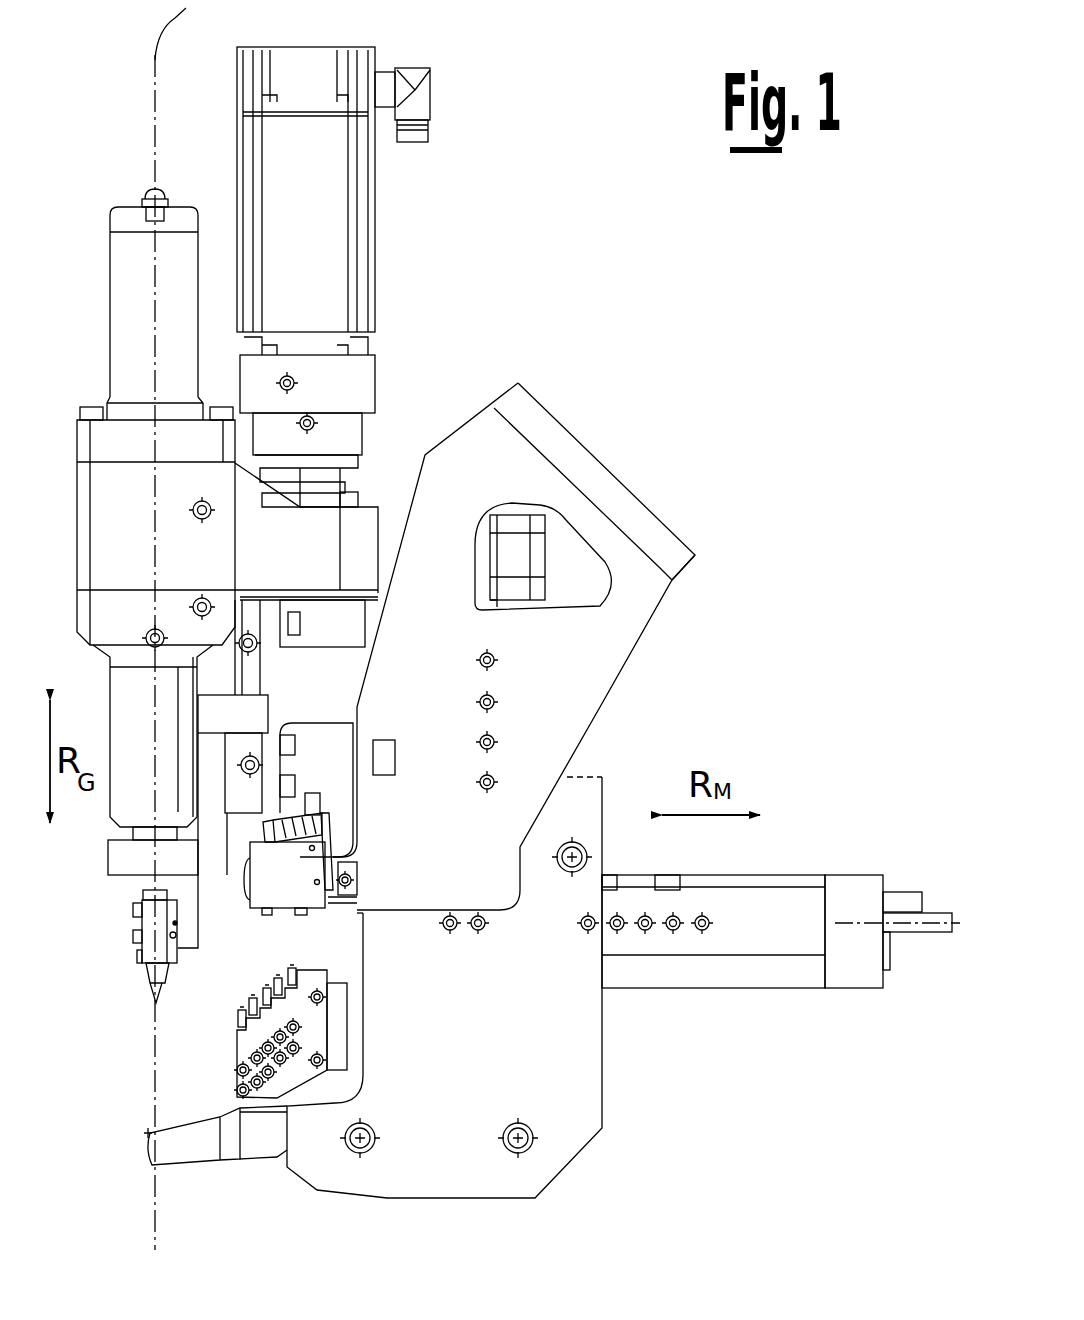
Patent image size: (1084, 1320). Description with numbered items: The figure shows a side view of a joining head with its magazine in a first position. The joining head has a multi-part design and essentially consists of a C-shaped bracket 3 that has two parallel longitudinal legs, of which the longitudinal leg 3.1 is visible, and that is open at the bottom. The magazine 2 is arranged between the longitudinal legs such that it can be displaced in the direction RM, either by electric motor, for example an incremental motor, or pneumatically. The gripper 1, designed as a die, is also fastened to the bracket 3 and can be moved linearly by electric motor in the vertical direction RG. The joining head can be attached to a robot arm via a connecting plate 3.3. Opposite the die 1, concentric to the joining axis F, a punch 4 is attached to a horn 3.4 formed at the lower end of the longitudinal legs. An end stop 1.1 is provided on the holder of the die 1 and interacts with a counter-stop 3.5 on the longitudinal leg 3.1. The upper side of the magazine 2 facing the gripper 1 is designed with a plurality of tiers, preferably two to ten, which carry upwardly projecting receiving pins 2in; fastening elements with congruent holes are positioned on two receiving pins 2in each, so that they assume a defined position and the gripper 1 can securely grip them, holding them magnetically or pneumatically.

The gripper 1 is at (118, 1010).
The end stop 1.1 is at (223, 821).
The magazine 2 is at (230, 1065).
The receiving pin 2in is at (248, 1013).
The C-shaped bracket 3 is at (592, 398).
The longitudinal leg 3.1 is at (567, 1140).
The connecting plate 3.3 is at (657, 528).
The horn 3.4 is at (203, 1147).
The counter-stop 3.5 is at (242, 853).
The punch 4 is at (148, 1133).